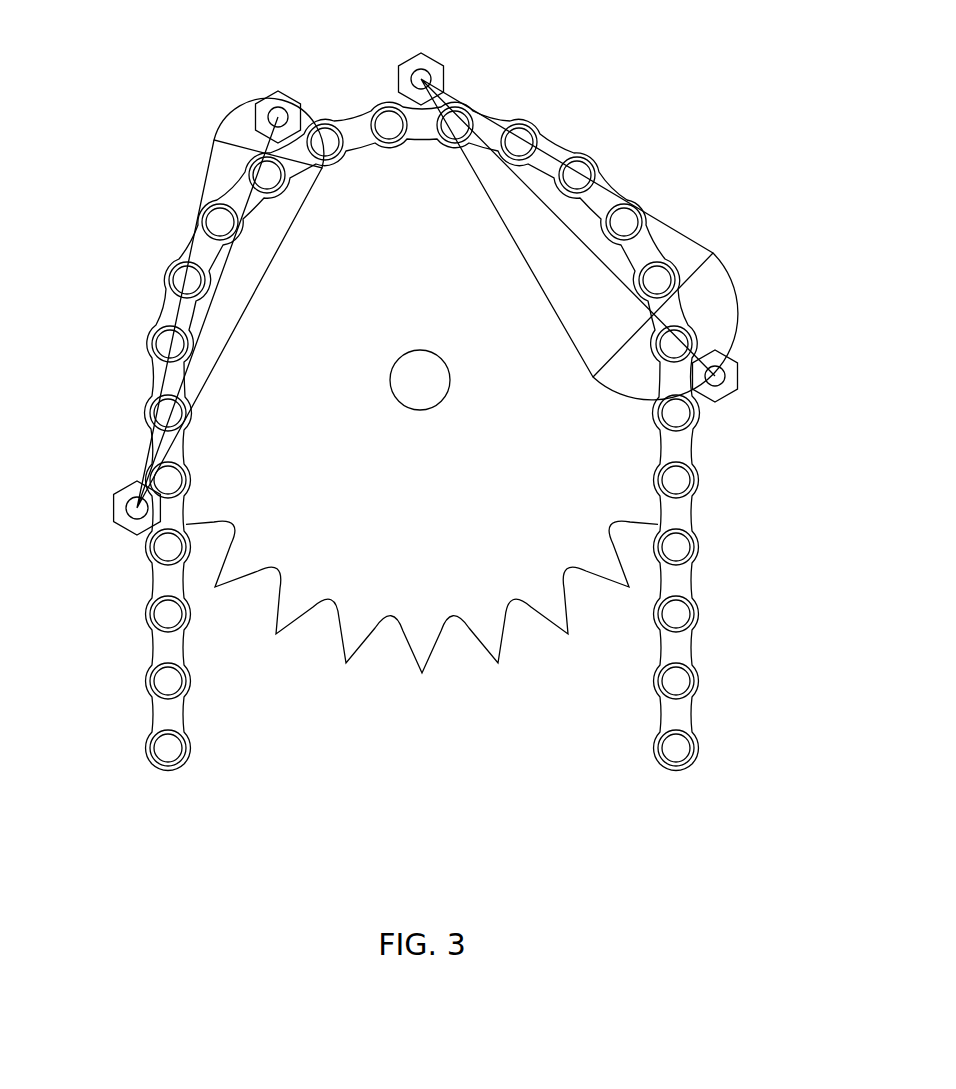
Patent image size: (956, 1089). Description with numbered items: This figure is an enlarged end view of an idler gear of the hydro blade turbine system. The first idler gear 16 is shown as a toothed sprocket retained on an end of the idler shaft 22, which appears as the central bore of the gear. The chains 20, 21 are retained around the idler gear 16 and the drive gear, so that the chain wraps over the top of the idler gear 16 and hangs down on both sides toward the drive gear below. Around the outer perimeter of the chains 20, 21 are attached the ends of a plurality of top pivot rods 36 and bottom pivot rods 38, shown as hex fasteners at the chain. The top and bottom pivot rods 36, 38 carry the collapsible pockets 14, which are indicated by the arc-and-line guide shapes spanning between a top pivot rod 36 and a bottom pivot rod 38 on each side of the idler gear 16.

The collapsible pocket 14 is at (180, 176).
The first idler gear 16 is at (480, 474).
The first chain 20 is at (488, 436).
The second chain 21 is at (695, 638).
The idler shaft 22 is at (405, 410).
The top pivot rod 36 is at (422, 53).
The bottom pivot rod 38 is at (272, 90).